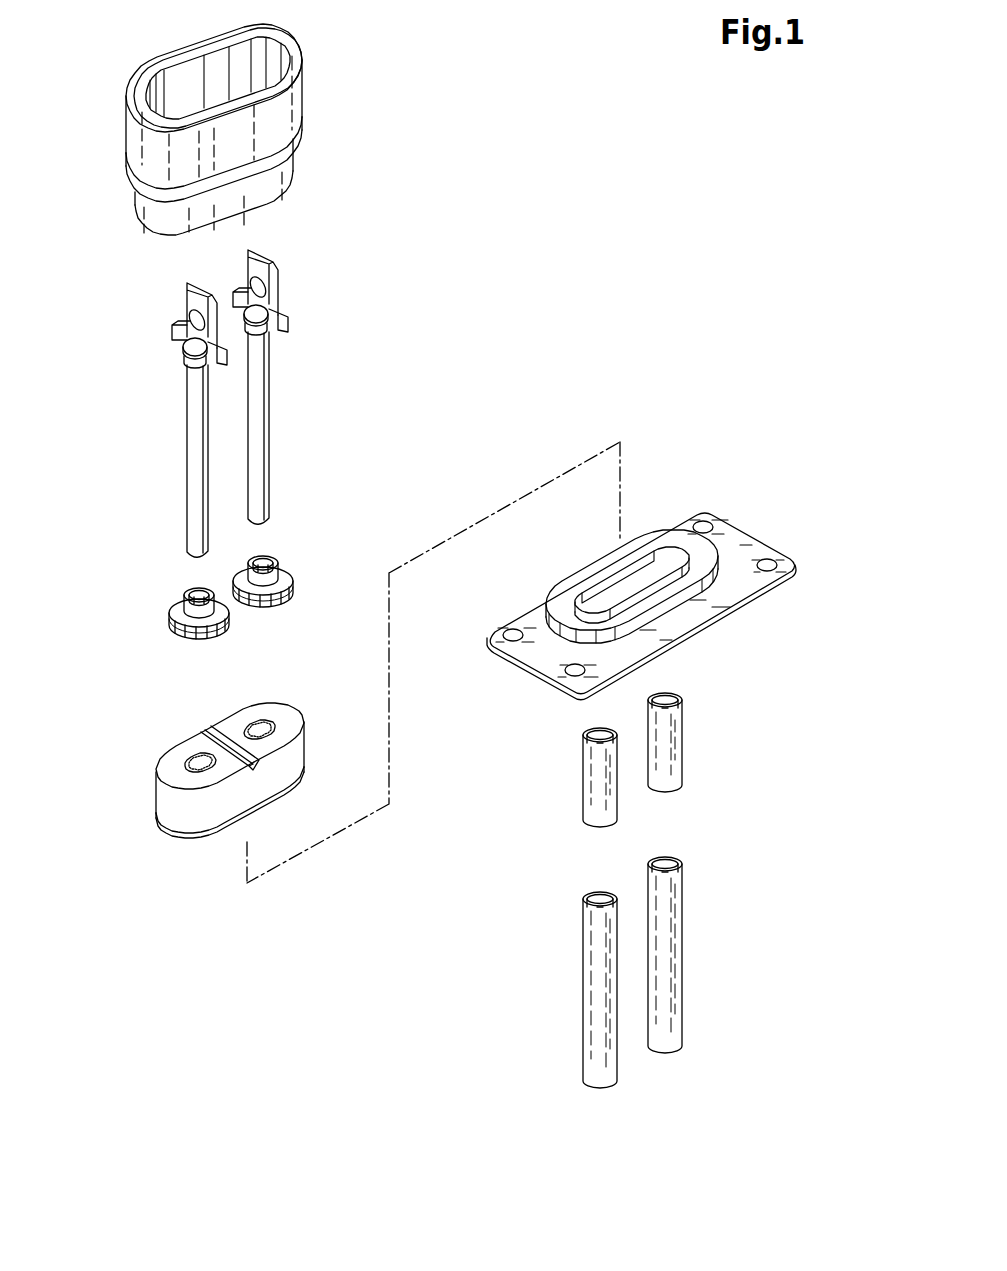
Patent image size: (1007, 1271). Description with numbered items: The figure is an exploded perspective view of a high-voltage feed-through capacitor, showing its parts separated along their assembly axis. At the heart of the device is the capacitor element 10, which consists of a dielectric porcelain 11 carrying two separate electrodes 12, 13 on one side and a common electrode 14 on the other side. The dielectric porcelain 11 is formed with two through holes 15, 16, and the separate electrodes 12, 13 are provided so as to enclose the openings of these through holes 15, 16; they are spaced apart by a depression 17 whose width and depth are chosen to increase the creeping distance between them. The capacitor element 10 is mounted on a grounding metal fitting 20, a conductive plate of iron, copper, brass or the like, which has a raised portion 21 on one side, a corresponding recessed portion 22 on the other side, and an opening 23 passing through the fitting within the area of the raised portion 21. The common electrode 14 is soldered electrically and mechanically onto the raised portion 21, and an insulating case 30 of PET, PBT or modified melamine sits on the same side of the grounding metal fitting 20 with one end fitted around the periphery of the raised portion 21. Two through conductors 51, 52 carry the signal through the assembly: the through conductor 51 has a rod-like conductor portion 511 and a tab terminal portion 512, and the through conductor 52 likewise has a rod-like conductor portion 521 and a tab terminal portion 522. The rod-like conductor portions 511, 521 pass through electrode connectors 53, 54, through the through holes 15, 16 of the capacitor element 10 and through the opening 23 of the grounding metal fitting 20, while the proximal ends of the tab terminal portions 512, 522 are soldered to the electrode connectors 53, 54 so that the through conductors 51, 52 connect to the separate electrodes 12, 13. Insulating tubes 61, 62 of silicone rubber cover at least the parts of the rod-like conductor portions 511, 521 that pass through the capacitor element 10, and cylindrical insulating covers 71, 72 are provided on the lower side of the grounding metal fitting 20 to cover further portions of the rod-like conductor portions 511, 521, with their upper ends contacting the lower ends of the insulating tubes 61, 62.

The capacitor element 10 is at (232, 773).
The dielectric porcelain 11 is at (172, 805).
The separate electrode 12 is at (280, 718).
The separate electrode 13 is at (170, 767).
The common electrode 14 is at (173, 827).
The through hole 15 is at (260, 723).
The through hole 16 is at (198, 755).
The depression 17 is at (210, 728).
The grounding metal fitting 20 is at (651, 583).
The raised portion 21 is at (652, 540).
The recessed portion 22 is at (693, 632).
The opening 23 is at (610, 577).
The insulating case 30 is at (309, 72).
The through conductor 51 is at (301, 363).
The rod-like conductor portion 511 is at (273, 415).
The tab terminal portion 512 is at (283, 302).
The through conductor 52 is at (162, 420).
The rod-like conductor portion 521 is at (193, 442).
The tab terminal portion 522 is at (175, 338).
The electrode connector 53 is at (285, 563).
The electrode connector 54 is at (172, 615).
The insulating tube 61 is at (685, 748).
The insulating tube 62 is at (582, 788).
The insulating cover 71 is at (685, 945).
The insulating cover 72 is at (582, 987).